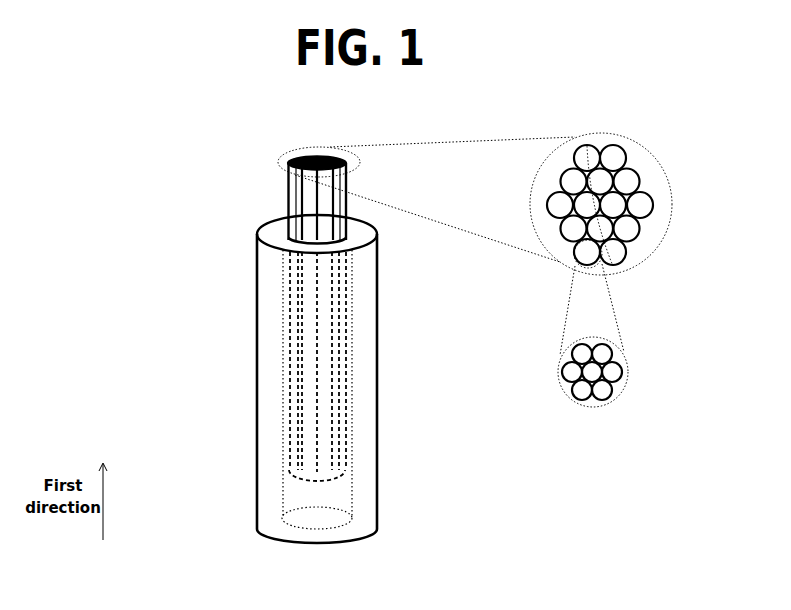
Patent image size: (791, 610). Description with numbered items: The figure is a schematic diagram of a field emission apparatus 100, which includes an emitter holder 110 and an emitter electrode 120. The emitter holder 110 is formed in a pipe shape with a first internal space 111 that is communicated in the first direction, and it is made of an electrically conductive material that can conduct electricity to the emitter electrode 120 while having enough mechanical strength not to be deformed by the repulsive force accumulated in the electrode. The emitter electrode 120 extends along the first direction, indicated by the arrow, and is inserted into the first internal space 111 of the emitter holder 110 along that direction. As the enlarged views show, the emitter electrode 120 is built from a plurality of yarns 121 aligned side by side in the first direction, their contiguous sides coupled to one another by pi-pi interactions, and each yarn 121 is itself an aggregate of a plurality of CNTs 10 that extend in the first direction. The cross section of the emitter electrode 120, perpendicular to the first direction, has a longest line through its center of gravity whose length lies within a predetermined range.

The field emission apparatus 100 is at (172, 126).
The emitter holder 110 is at (256, 430).
The first internal space 111 is at (319, 520).
The emitter electrode 120 is at (286, 192).
The yarns 121 is at (613, 158).
The CNTs 10 is at (603, 393).